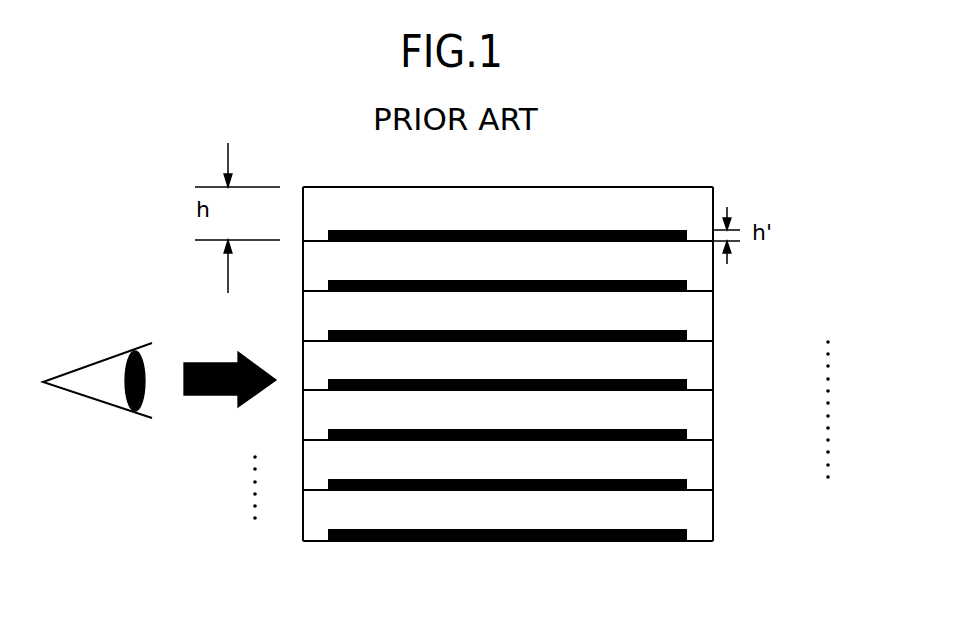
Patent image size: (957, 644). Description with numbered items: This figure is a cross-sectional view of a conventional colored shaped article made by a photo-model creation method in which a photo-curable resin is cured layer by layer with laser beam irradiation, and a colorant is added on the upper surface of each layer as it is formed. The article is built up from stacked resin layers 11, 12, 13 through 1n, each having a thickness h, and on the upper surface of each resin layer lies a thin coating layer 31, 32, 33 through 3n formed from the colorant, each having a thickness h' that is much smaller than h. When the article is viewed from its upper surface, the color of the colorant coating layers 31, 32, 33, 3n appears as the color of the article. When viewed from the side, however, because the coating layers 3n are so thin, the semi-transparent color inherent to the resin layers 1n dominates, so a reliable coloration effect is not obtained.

The layer formed from photo-curable resin 11 is at (713, 202).
The layer formed from photo-curable resin 12 is at (713, 277).
The layer formed from photo-curable resin 13 is at (713, 332).
The layer formed from photo-curable resin 1n is at (713, 532).
The coating layer formed from colorant 31 is at (329, 242).
The coating layer formed from colorant 32 is at (329, 292).
The coating layer formed from colorant 33 is at (329, 391).
The coating layer formed from colorant 3n is at (329, 541).